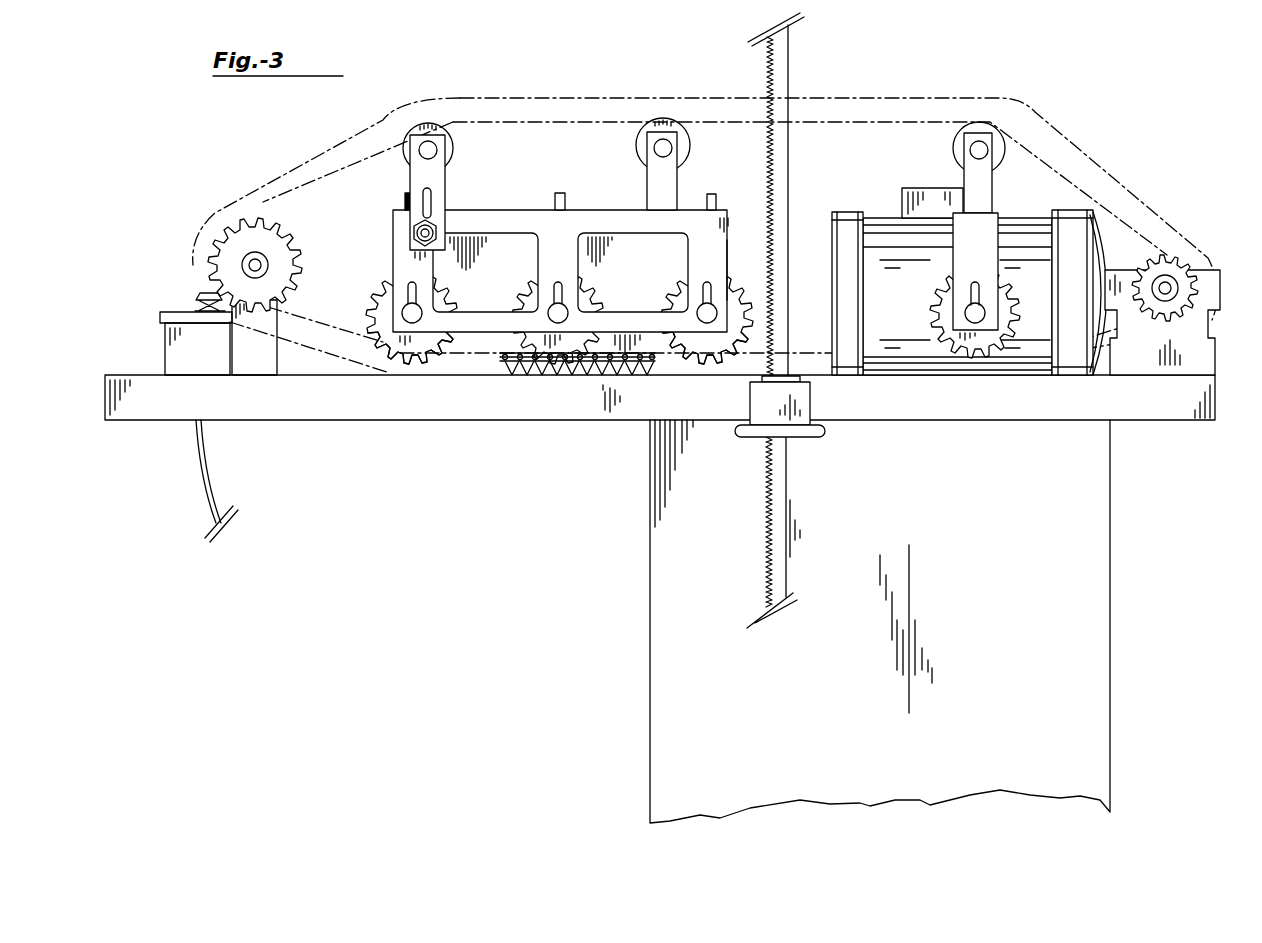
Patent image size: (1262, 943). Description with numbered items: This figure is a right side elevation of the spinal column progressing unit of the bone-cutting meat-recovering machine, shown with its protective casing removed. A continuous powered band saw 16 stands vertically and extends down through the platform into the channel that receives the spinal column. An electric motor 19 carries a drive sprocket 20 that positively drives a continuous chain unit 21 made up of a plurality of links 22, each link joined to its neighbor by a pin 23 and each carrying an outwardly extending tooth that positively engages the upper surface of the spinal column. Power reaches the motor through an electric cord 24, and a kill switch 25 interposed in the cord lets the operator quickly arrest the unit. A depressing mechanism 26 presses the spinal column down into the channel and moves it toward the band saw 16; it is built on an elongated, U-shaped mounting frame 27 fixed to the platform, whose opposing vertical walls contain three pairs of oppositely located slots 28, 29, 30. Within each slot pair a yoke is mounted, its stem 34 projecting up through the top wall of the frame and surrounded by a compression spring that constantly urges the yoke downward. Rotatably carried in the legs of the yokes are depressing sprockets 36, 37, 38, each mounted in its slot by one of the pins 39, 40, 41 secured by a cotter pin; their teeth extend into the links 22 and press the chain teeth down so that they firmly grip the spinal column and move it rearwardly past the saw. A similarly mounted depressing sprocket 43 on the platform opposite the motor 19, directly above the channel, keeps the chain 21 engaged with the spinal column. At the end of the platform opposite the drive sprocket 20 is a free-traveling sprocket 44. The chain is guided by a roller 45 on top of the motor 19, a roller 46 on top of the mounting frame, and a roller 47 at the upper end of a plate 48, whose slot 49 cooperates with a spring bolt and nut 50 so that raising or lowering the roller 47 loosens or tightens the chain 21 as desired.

The powered band saw 16 is at (792, 67).
The electric motor 19 is at (885, 212).
The drive sprocket 20 is at (1185, 265).
The continuous chain unit 21 is at (1143, 200).
The links 22 is at (638, 382).
The pin 23 is at (650, 362).
The electric cord 24 is at (205, 493).
The kill switch 25 is at (205, 298).
The depressing mechanism 26 is at (393, 243).
The mounting frame 27 is at (725, 253).
The slot 28 is at (393, 290).
The slot 29 is at (562, 297).
The slot 30 is at (708, 287).
The stem 34 is at (407, 197).
The depressing sprocket 36 is at (385, 345).
The depressing sprocket 37 is at (515, 352).
The depressing sprocket 38 is at (690, 350).
The pin 39 is at (393, 317).
The pin 40 is at (548, 322).
The pin 41 is at (700, 310).
The depressing sprocket 43 is at (935, 338).
The free-traveling sprocket 44 is at (230, 245).
The roller 45 is at (953, 147).
The roller 46 is at (637, 147).
The roller 47 is at (402, 137).
The plate 48 is at (447, 177).
The slot 49 is at (431, 198).
The spring bolt and nut 50 is at (433, 244).